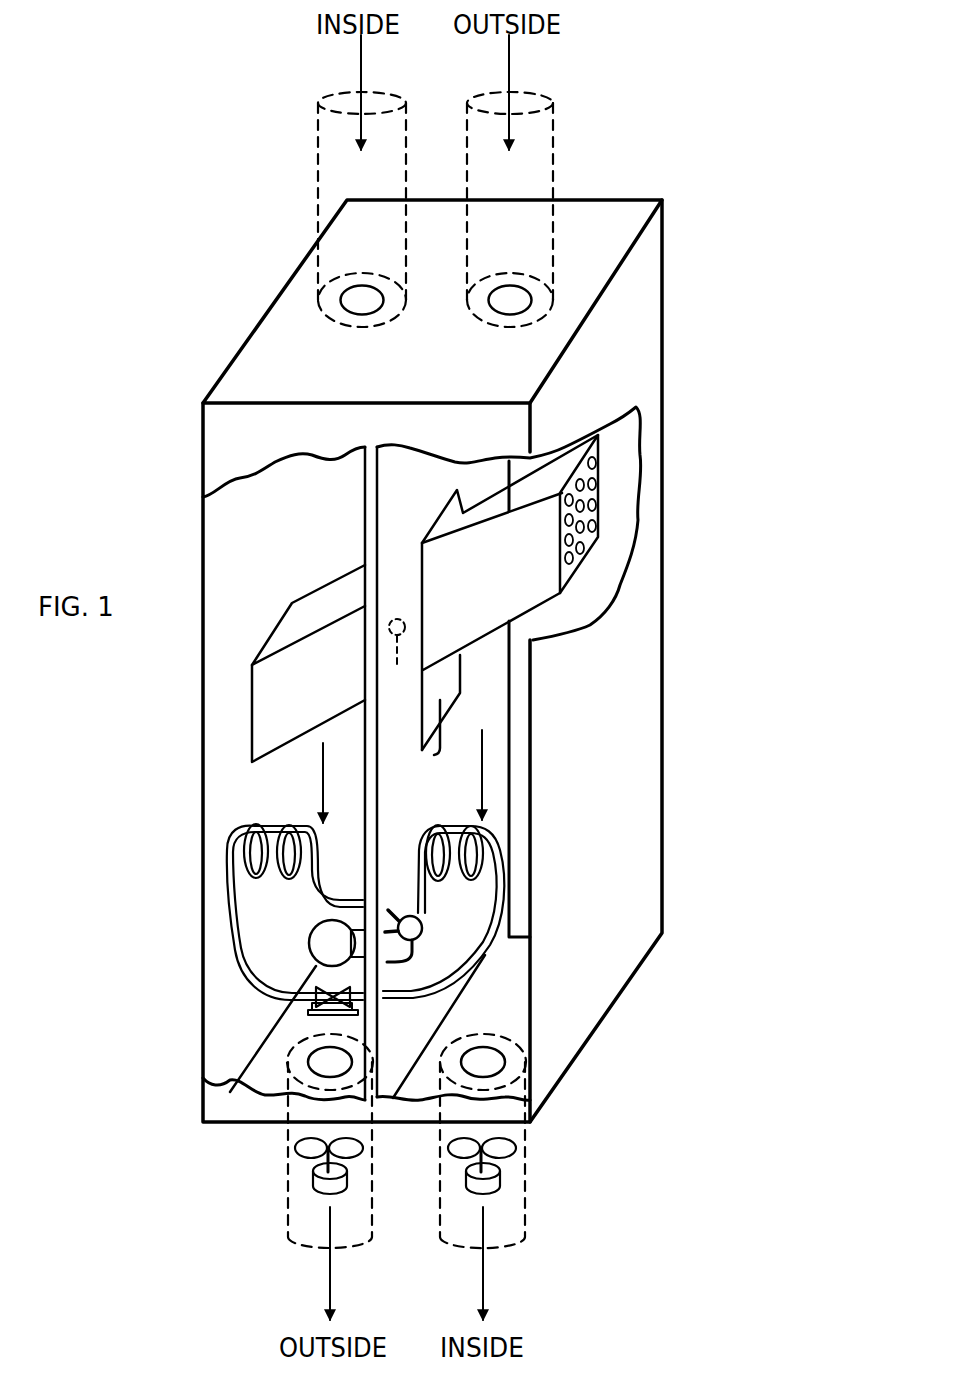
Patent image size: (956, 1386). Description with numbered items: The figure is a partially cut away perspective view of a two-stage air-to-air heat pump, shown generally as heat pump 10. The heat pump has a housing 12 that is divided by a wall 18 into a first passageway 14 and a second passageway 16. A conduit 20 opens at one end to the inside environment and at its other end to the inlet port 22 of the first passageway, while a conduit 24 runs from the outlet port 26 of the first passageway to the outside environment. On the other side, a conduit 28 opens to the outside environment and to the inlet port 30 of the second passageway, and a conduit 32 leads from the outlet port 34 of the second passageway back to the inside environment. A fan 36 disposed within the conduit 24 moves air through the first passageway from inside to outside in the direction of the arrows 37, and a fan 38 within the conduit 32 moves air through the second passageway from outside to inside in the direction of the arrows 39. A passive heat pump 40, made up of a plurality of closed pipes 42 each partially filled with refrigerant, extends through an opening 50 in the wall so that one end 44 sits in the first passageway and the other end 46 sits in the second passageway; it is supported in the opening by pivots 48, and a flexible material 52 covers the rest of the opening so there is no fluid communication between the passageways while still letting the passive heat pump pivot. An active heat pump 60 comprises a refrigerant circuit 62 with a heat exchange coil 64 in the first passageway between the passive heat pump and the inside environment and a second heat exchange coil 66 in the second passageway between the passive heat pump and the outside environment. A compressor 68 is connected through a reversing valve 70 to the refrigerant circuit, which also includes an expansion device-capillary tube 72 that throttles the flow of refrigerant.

The two-stage air-to-air heat pump 10 is at (151, 435).
The housing 12 is at (638, 642).
The first passageway 14 is at (297, 803).
The second passageway 16 is at (446, 823).
The wall 18 is at (402, 478).
The conduit 20 is at (318, 162).
The inlet port 22 is at (362, 288).
The conduit 24 is at (287, 1172).
The outlet port 26 is at (310, 1050).
The conduit 28 is at (553, 160).
The inlet port 30 is at (509, 288).
The conduit 32 is at (527, 1165).
The outlet port 34 is at (510, 1057).
The fan 36 is at (322, 1192).
The arrows 37 is at (360, 56).
The fan 38 is at (487, 1197).
The arrows 39 is at (509, 58).
The passive heat pump 40 is at (340, 593).
The closed pipes 42 is at (596, 525).
The end of passive heat pump 44 is at (303, 687).
The end of passive heat pump 46 is at (493, 598).
The pivots 48 is at (397, 659).
The opening 50 is at (440, 752).
The flexible material 52 is at (440, 692).
The active heat pump 60 is at (520, 918).
The refrigerant circuit 62 is at (482, 955).
The heat exchange coil 64 is at (240, 818).
The second heat exchange coil 66 is at (482, 826).
The compressor 68 is at (312, 925).
The reversing valve 70 is at (425, 927).
The expansion device-capillary tube 72 is at (338, 987).